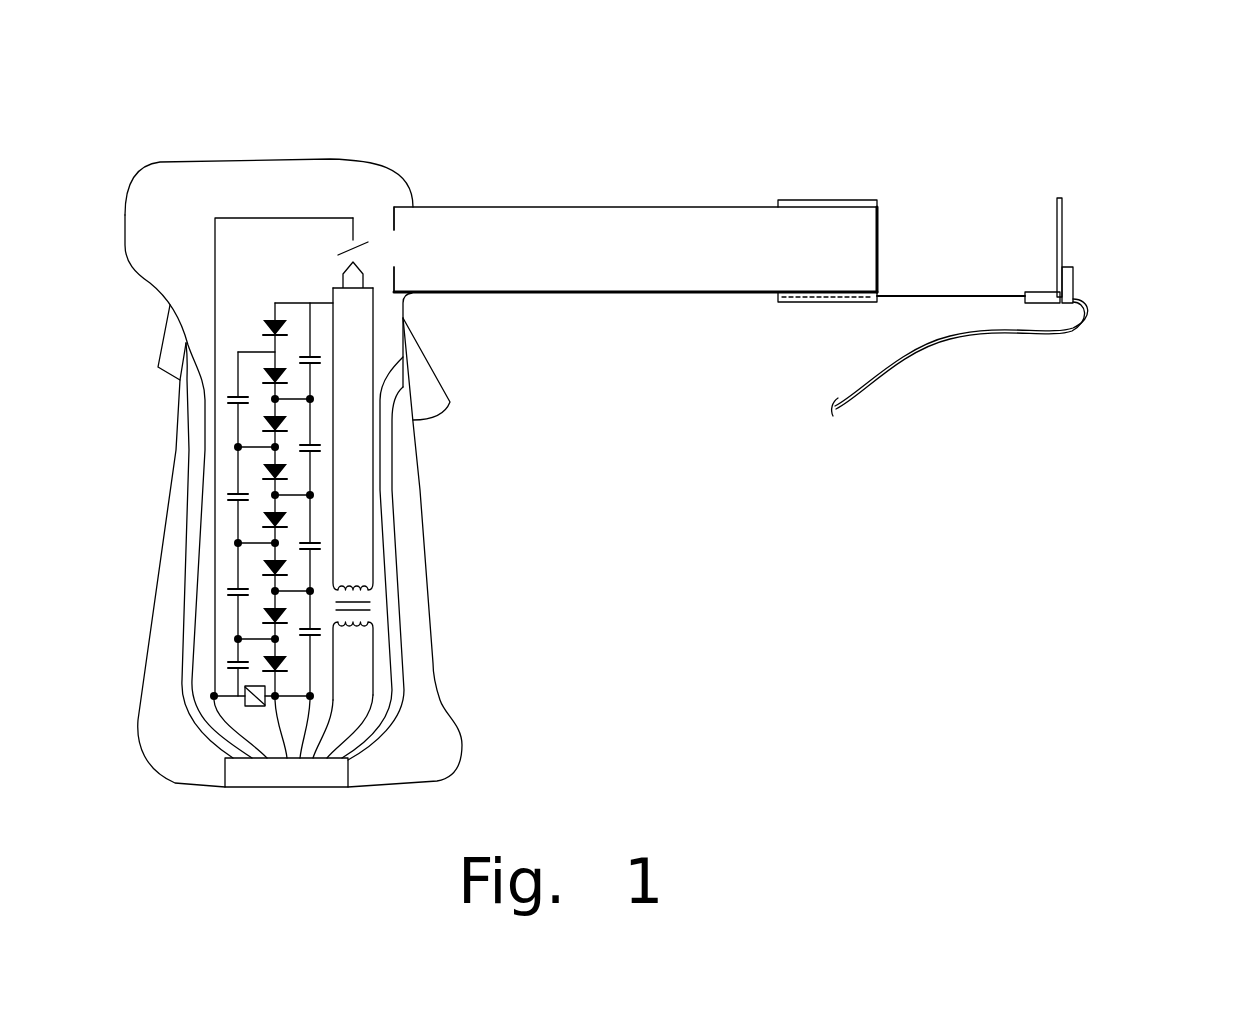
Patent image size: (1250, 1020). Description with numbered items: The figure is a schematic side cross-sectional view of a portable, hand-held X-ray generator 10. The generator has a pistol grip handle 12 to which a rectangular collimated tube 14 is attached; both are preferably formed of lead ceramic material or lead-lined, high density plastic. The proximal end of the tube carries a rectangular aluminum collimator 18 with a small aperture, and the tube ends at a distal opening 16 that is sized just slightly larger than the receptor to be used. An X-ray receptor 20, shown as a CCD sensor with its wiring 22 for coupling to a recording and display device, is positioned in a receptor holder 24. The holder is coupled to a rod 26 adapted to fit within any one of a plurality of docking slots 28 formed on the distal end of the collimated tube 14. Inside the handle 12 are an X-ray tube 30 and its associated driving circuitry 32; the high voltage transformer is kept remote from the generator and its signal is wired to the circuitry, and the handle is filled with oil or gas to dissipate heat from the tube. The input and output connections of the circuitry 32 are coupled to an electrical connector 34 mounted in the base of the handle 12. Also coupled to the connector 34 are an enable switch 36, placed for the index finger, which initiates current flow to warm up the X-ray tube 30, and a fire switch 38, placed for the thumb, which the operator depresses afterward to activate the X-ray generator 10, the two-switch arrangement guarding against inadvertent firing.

The portable X-ray generator 10 is at (505, 65).
The handle 12 is at (437, 660).
The collimated tube 14 is at (565, 207).
The distal opening 16 is at (888, 232).
The collimator 18 is at (413, 228).
The X-ray receptor 20 is at (1063, 230).
The wiring 22 is at (995, 336).
The receptor holder 24 is at (1133, 265).
The rod 26 is at (955, 295).
The docking slots 28 is at (818, 200).
The X-ray tube 30 is at (326, 256).
The driving circuitry 32 is at (232, 206).
The electrical connector 34 is at (272, 778).
The enable switch 36 is at (443, 375).
The fire switch 38 is at (163, 350).